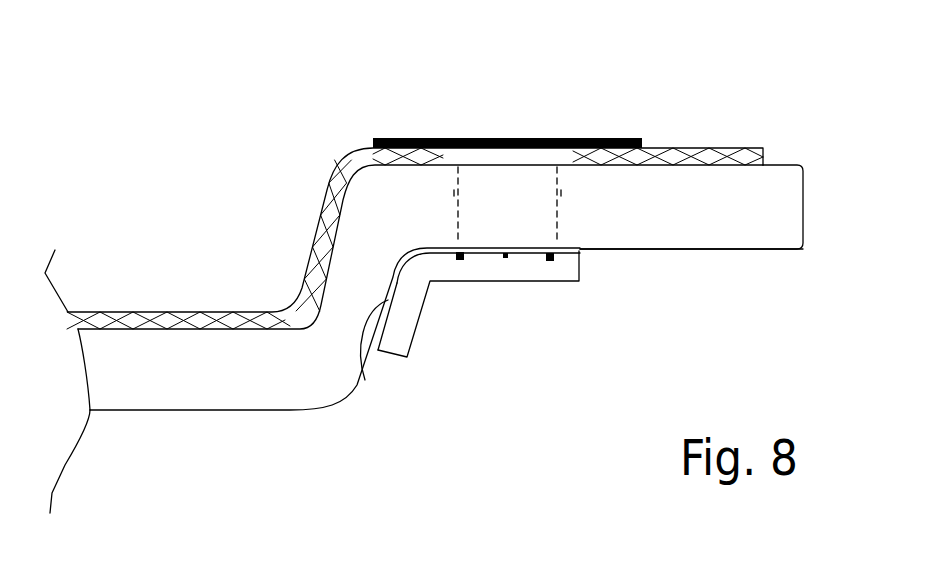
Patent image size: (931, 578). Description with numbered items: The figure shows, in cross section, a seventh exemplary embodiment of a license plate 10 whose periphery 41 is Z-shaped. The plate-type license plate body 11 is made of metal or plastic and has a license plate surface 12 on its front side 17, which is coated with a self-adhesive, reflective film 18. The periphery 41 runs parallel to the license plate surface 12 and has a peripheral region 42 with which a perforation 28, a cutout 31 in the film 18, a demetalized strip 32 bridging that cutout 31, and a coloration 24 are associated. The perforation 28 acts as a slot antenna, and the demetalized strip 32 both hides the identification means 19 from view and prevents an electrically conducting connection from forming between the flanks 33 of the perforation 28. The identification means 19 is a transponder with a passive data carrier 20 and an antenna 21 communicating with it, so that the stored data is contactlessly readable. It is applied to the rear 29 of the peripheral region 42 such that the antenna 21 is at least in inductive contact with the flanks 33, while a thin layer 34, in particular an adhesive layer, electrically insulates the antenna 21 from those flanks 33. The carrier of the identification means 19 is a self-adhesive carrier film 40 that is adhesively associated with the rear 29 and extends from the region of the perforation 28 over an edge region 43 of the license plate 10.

The license plate 10 is at (155, 243).
The license plate body 11 is at (170, 392).
The license plate surface 12 is at (80, 290).
The front side 17 is at (145, 317).
The film 18 is at (220, 317).
The identification means 19 is at (483, 318).
The data carrier 20 is at (503, 260).
The antenna 21 is at (458, 262).
The coloration 24 is at (378, 138).
The perforation 28 is at (542, 185).
The rear 29 is at (278, 413).
The cutout 31 is at (445, 153).
The demetalized strip 32 is at (530, 157).
The flanks 33 is at (457, 193).
The thin layer 34 is at (582, 250).
The carrier film 40 is at (572, 272).
The periphery 41 is at (657, 185).
The peripheral region 42 is at (722, 193).
The edge region 43 is at (365, 380).